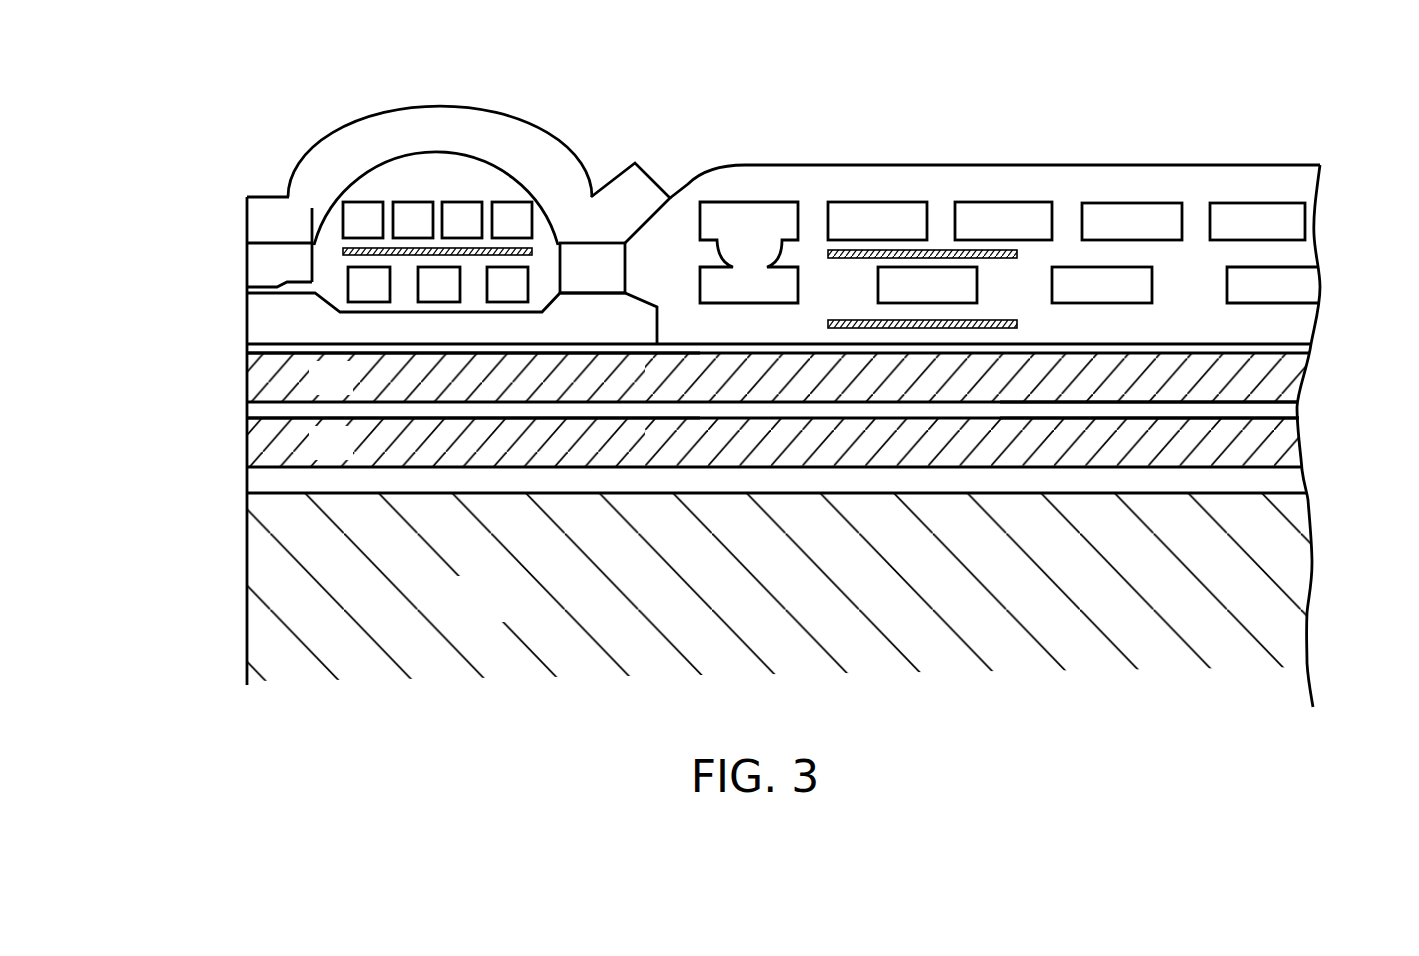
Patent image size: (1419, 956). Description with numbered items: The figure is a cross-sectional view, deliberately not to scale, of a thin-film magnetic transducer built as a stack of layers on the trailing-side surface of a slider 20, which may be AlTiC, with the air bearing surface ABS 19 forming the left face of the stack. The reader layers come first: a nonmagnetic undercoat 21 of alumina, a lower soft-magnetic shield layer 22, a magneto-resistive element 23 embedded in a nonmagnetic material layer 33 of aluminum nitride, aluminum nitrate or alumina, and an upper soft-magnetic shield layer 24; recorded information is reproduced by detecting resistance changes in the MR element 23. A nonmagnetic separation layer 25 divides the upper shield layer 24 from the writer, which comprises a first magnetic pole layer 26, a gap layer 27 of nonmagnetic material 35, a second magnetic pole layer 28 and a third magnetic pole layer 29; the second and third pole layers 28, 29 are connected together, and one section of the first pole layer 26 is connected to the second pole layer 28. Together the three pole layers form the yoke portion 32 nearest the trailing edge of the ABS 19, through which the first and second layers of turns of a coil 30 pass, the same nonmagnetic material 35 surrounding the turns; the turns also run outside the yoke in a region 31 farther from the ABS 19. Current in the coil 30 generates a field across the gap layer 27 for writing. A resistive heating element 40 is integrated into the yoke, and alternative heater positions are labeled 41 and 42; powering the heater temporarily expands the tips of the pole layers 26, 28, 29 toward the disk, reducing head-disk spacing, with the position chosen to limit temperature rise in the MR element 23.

The ABS 19 is at (247, 673).
The slider 20 is at (464, 615).
The undercoat 21 is at (257, 483).
The lower (S1) magnetic shield layer 22 is at (247, 443).
The magneto-resistive (MR) element 23 is at (270, 410).
The upper (S2) magnetic shield layer 24 is at (247, 380).
The separation layer 25 is at (243, 347).
The first magnetic pole layer 26 is at (247, 318).
The gap layer 27 is at (247, 288).
The second magnetic pole layer 28 is at (245, 263).
The third magnetic pole layer 29 is at (245, 222).
The coil 30 is at (1283, 223).
The region 31 is at (695, 92).
The yoke portion 32 is at (317, 90).
The nonmagnetic material layer 33 is at (1293, 413).
The nonmagnetic material 35 is at (450, 192).
The resistive heating element 40 is at (343, 252).
The position (alternative resistive heating element location) 41 is at (828, 253).
The position (alternative resistive heating element location) 42 is at (1017, 323).